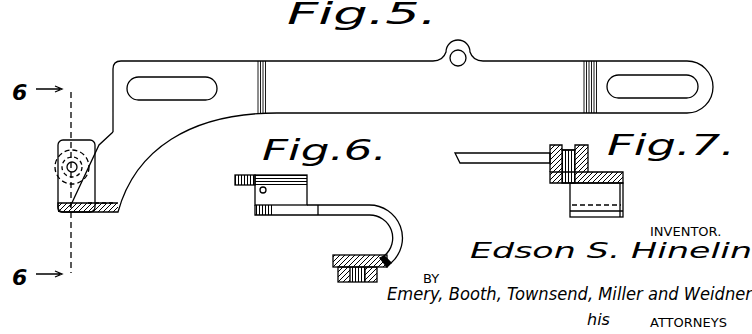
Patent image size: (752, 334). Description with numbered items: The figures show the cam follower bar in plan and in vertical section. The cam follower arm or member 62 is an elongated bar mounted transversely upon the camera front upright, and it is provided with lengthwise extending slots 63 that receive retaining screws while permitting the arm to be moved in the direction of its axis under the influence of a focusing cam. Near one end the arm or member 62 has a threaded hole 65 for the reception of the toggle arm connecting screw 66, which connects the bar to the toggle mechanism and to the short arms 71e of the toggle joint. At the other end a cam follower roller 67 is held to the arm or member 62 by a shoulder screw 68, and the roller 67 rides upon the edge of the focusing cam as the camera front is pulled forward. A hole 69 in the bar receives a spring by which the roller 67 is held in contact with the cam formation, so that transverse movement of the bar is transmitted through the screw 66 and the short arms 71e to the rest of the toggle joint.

In FIG. 5, the cam follower arm or member 62 is at (537, 70).
In FIG. 6, the cam follower arm or member 62 is at (307, 180).
In FIG. 7, the cam follower arm or member 62 is at (607, 178).
In FIG. 5, the lengthwise extending slots 63 is at (172, 88).
In FIG. 5, the threaded hole 65 is at (463, 53).
In FIG. 7, the threaded hole 65 is at (556, 180).
In FIG. 7, the toggle arm connecting screw 66 is at (560, 150).
In FIG. 5, the cam follower roller 67 is at (56, 160).
In FIG. 6, the cam follower roller 67 is at (338, 272).
In FIG. 5, the shoulder screw 68 is at (66, 168).
In FIG. 6, the shoulder screw 68 is at (355, 282).
In FIG. 6, the hole 69 is at (259, 191).
In FIG. 7, the short arms 71e is at (481, 148).